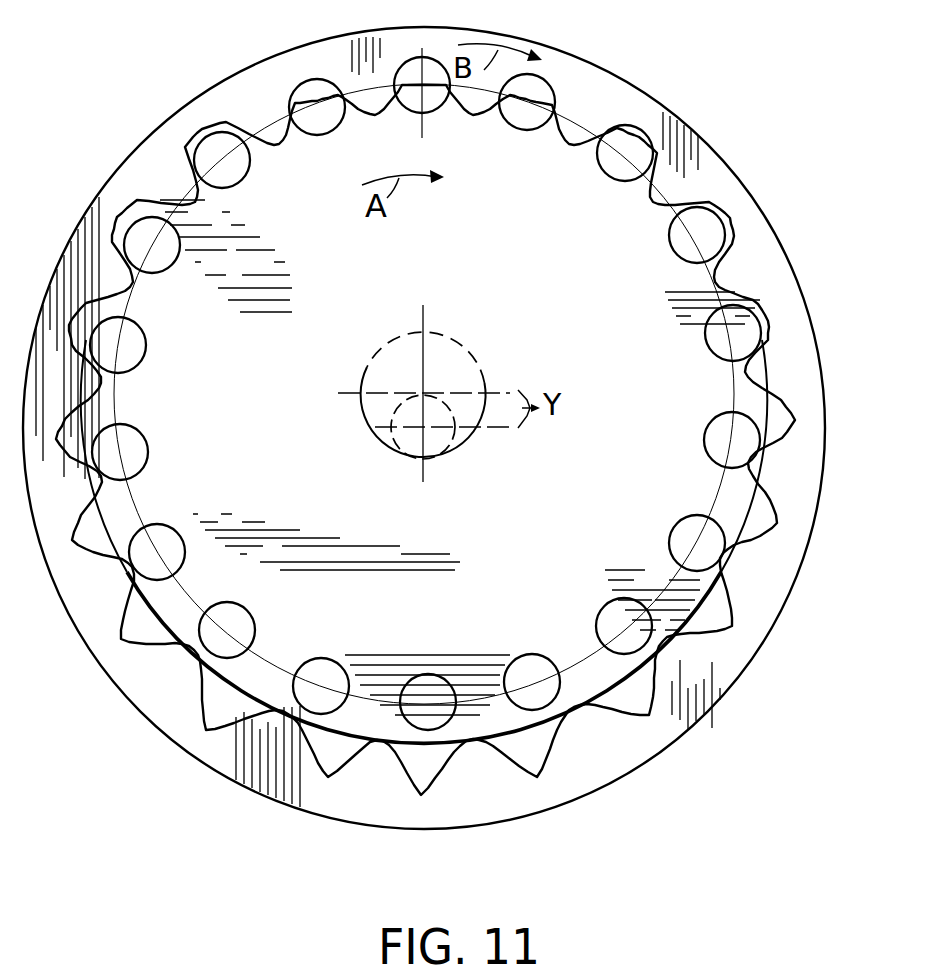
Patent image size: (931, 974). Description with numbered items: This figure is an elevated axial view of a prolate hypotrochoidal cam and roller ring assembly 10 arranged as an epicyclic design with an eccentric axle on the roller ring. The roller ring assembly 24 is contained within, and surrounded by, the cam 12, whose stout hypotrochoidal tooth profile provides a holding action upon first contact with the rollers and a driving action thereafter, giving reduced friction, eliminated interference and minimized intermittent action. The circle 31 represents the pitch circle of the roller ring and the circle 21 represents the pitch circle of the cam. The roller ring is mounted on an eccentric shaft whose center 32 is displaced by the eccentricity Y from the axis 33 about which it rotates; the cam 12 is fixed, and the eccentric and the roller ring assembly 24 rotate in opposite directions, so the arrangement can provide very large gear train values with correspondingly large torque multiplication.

The cycloidal speed reducer 10 is at (218, 74).
The cam 12 is at (618, 99).
The pitch circle of the cam 21 is at (227, 713).
The roller ring assembly 24 is at (616, 206).
The pitch circle of the roller ring 31 is at (567, 667).
The eccentric shaft circle 32 is at (425, 430).
The axis 33 is at (423, 392).